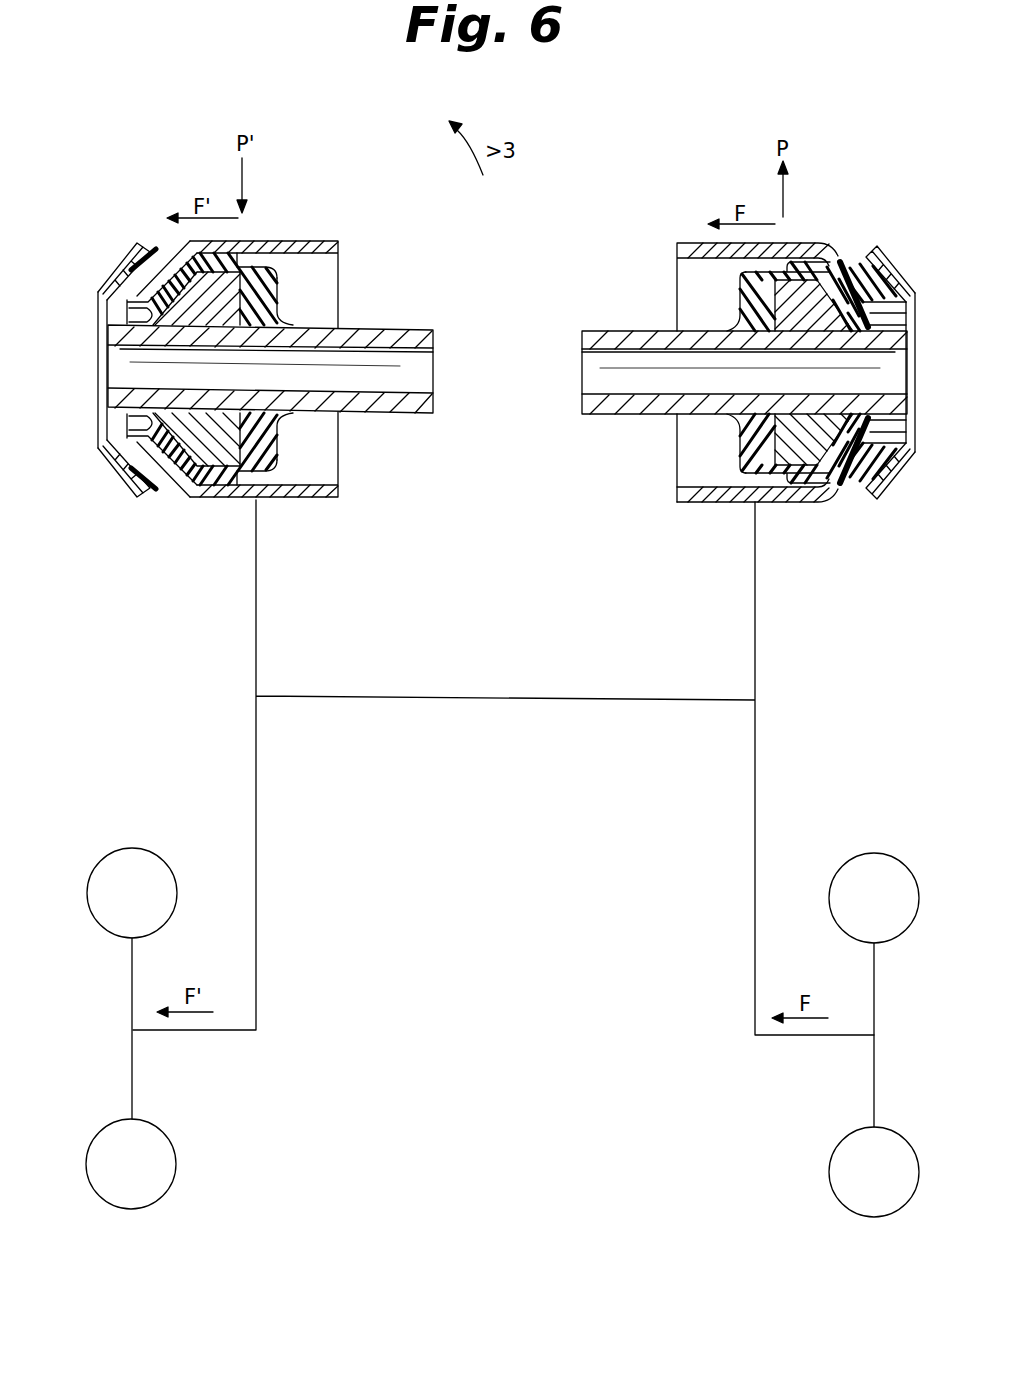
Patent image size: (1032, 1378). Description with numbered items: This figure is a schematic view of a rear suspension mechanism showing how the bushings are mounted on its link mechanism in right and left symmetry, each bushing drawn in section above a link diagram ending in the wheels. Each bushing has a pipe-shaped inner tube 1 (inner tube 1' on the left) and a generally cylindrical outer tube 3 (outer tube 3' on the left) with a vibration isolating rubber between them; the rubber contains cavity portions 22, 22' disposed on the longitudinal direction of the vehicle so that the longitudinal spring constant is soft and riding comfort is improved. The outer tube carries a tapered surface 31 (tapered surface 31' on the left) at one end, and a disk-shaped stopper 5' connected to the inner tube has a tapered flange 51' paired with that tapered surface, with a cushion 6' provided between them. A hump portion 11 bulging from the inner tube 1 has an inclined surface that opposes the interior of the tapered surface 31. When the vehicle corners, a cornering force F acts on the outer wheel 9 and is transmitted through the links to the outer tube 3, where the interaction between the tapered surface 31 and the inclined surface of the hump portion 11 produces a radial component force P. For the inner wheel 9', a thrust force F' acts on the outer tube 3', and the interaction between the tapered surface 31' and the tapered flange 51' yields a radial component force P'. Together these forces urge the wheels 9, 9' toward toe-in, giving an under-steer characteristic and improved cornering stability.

The inner tube 1 is at (744, 340).
The inner tube 1' is at (270, 399).
The outer tube 3 is at (757, 413).
The outer tube 3' is at (264, 409).
The stopper 5' is at (71, 370).
The cushion 6' is at (134, 338).
The wheel 9 is at (847, 1035).
The inner wheel 9' is at (160, 1028).
The hump portion 11 is at (838, 250).
The cavity portion 22 is at (788, 384).
The cavity portion 22' is at (249, 384).
The tapered surface 31 is at (883, 351).
The tapered surface 31' is at (162, 331).
The tapered flange 51' is at (113, 362).